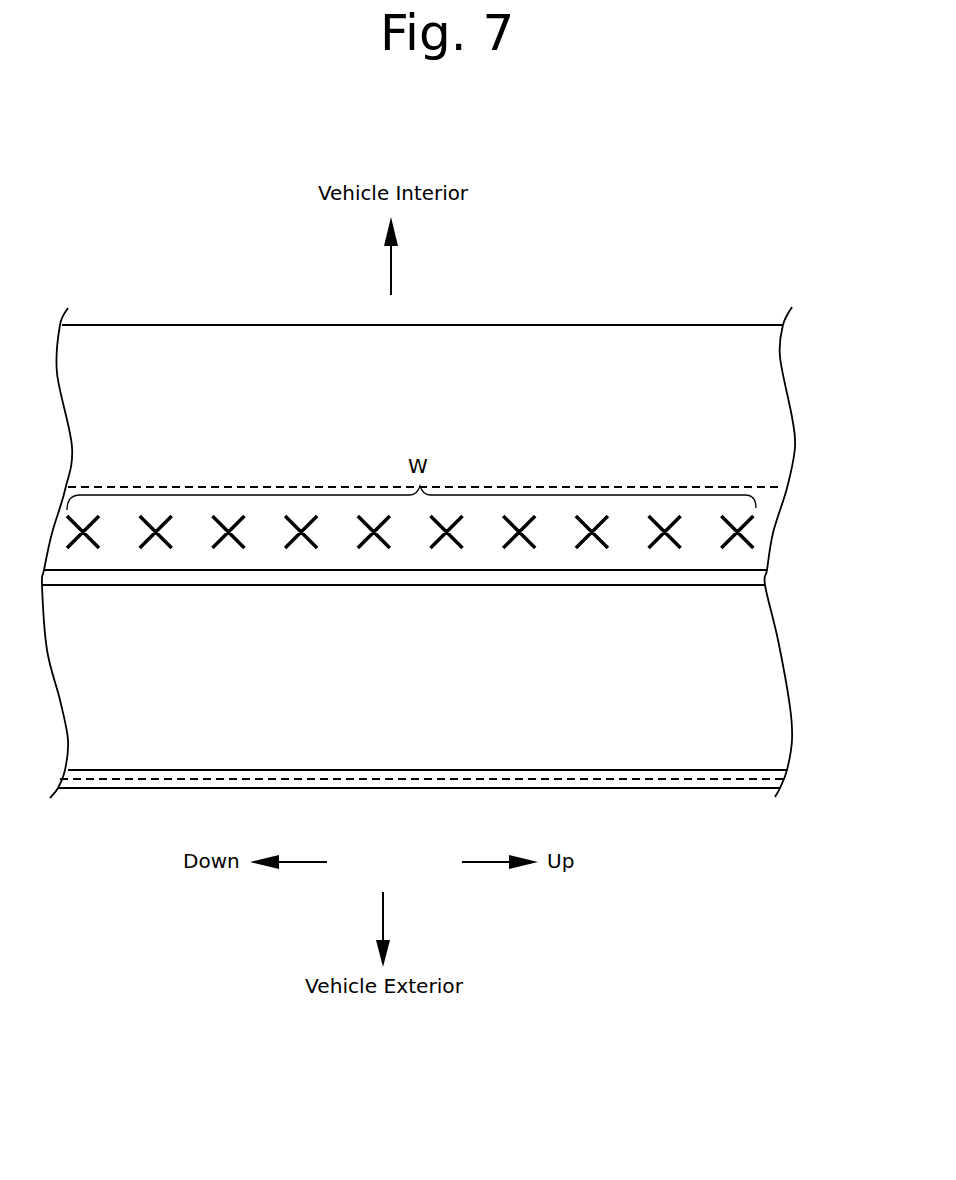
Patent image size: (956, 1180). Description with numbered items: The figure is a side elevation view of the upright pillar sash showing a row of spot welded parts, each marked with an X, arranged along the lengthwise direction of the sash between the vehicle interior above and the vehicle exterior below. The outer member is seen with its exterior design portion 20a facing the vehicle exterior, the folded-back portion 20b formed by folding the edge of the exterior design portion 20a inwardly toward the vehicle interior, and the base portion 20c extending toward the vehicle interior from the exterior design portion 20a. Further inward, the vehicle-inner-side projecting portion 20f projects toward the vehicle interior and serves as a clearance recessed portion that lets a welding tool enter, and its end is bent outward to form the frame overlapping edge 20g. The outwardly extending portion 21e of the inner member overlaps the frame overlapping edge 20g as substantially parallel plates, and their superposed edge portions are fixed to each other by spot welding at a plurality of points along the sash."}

The outwardly extending portion 21e is at (750, 432).
The frame overlapping edge 20g is at (767, 503).
The vehicle-inner-side projecting portion 20f is at (753, 578).
The base portion 20c is at (753, 695).
The folded-back portion 20b is at (613, 770).
The exterior design portion 20a is at (623, 788).